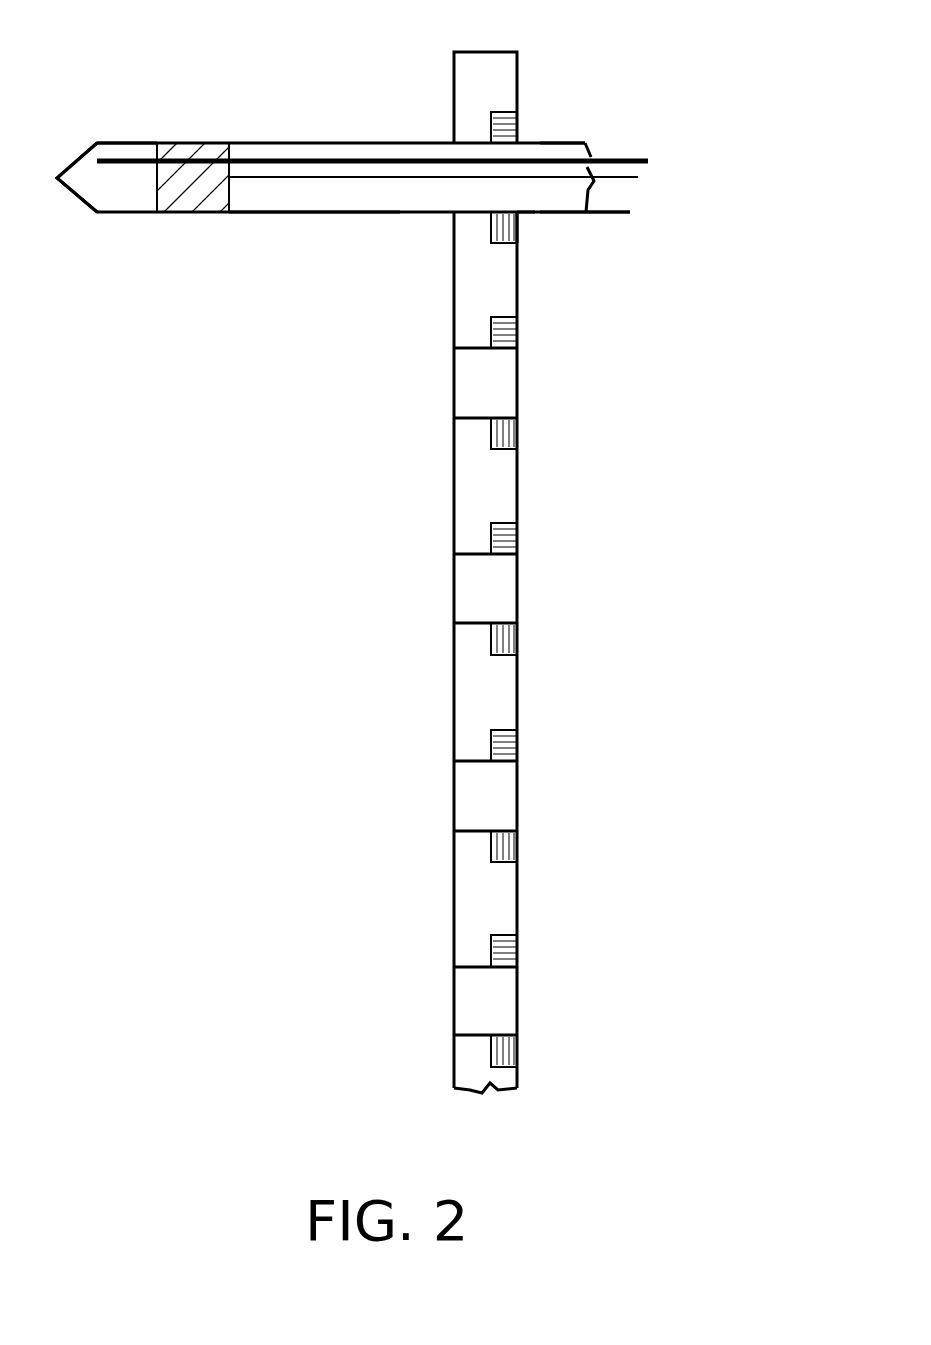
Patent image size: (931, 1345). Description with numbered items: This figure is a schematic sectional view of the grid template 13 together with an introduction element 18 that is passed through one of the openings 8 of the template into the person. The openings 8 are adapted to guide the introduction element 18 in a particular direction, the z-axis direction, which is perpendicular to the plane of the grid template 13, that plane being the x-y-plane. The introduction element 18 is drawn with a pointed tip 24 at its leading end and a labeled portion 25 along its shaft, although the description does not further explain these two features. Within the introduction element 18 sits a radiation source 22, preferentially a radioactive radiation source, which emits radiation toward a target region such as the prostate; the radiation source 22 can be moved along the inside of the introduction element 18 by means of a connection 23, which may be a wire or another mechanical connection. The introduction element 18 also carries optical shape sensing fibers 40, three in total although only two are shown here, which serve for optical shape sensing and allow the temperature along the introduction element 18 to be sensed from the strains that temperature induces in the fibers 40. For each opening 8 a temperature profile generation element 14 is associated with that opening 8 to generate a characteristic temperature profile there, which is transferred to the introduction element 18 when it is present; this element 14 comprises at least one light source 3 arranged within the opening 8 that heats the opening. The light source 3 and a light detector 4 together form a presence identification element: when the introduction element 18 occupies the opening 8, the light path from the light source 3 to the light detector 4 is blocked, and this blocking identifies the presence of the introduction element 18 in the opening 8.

The light source 3 is at (517, 222).
The light detector 4 is at (517, 120).
The opening 8 is at (530, 226).
The grid template 13 is at (517, 886).
The temperature profile generation element 14 is at (490, 231).
The introduction element 18 is at (338, 143).
The radiation source 22 is at (200, 212).
The connection 23 is at (560, 175).
The needle tip 24 is at (62, 212).
The needle shaft 25 is at (284, 128).
The optical shape sensing fibers 40 is at (134, 158).